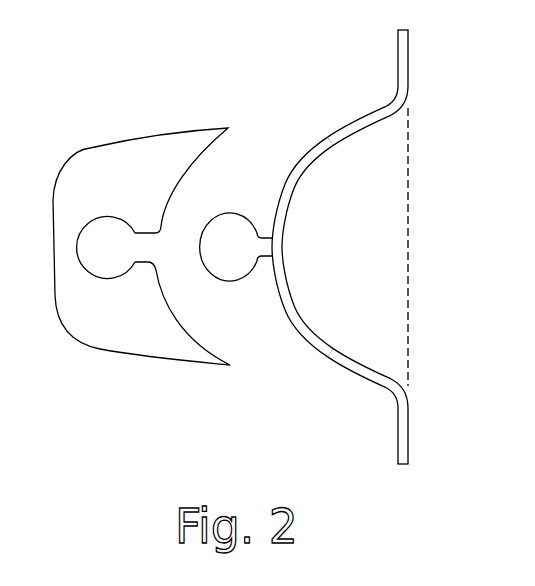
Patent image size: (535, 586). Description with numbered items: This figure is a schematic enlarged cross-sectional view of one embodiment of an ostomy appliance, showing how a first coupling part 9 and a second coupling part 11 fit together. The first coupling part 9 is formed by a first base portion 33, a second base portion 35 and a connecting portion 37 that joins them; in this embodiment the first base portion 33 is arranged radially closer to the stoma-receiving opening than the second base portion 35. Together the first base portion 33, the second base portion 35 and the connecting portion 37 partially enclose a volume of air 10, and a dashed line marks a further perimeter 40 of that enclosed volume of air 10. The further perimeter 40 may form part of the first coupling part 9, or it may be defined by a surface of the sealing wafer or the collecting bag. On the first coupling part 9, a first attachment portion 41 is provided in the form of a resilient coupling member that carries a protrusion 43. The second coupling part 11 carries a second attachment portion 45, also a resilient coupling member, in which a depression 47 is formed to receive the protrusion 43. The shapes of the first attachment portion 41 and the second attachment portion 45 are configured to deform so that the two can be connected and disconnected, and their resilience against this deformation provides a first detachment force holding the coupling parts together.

The first coupling part 9 is at (315, 253).
The volume of air 10 is at (438, 247).
The second coupling part 11 is at (141, 219).
The first base portion 33 is at (357, 377).
The second base portion 35 is at (333, 138).
The connecting portion 37 is at (293, 171).
The further perimeter 40 is at (408, 148).
The first attachment portion 41 is at (233, 287).
The protrusion 43 is at (203, 263).
The second attachment portion 45 is at (147, 257).
The depression 47 is at (125, 259).